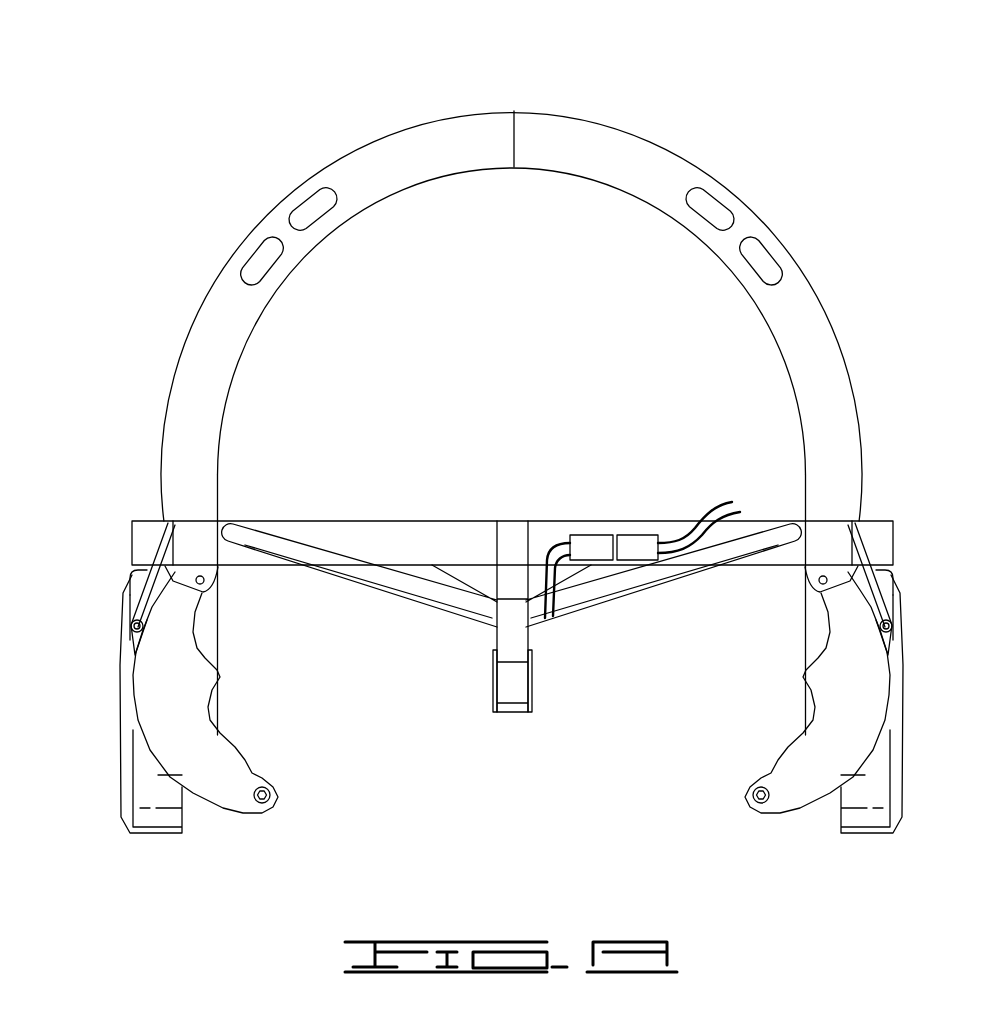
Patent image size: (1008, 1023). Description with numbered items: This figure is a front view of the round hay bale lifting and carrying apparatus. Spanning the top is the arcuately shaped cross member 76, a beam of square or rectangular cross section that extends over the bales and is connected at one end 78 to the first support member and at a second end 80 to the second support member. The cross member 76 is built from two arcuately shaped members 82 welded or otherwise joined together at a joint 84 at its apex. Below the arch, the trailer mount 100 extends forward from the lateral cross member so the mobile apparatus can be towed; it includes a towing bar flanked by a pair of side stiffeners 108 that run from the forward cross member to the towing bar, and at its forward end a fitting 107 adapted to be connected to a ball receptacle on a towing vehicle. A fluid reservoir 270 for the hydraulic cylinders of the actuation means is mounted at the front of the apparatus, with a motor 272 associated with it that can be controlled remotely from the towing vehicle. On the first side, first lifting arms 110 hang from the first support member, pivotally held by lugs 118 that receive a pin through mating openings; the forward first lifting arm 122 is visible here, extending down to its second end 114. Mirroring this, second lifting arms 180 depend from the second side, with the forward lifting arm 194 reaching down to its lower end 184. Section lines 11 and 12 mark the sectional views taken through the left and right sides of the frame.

The cross member 76 is at (612, 138).
The one end of cross member 78 is at (190, 522).
The second end of cross member 80 is at (830, 522).
The arcuately shaped members 82 is at (206, 346).
The joint 84 is at (512, 134).
The trailer mount 100 is at (668, 585).
The fitting 107 is at (492, 680).
The side stiffeners 108 is at (318, 553).
The first lifting arms 110 is at (259, 692).
The second end of first lifting arms 114 is at (272, 805).
The lugs 118 is at (145, 590).
The forward first lifting arm 122 is at (220, 755).
The second lifting arms 180 is at (775, 692).
The lower end of second lifting arms 184 is at (757, 808).
The forward lifting arm 194 is at (833, 728).
The fluid reservoir 270 is at (590, 545).
The motor 272 is at (645, 540).
The section line 11- 11 is at (200, 565).
The section line 12- 12 is at (823, 565).